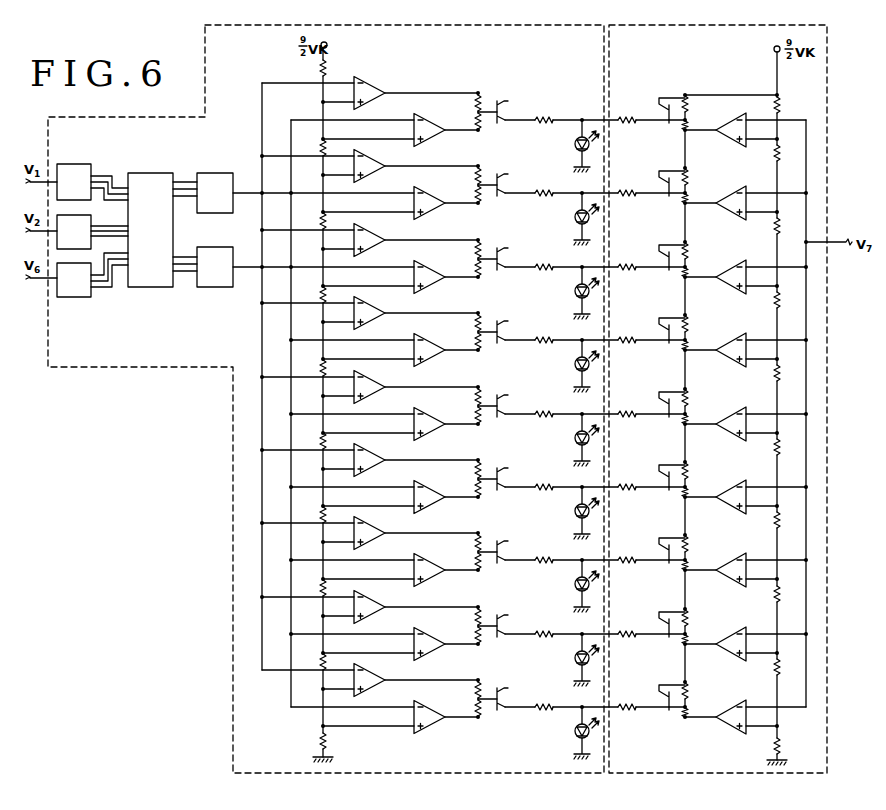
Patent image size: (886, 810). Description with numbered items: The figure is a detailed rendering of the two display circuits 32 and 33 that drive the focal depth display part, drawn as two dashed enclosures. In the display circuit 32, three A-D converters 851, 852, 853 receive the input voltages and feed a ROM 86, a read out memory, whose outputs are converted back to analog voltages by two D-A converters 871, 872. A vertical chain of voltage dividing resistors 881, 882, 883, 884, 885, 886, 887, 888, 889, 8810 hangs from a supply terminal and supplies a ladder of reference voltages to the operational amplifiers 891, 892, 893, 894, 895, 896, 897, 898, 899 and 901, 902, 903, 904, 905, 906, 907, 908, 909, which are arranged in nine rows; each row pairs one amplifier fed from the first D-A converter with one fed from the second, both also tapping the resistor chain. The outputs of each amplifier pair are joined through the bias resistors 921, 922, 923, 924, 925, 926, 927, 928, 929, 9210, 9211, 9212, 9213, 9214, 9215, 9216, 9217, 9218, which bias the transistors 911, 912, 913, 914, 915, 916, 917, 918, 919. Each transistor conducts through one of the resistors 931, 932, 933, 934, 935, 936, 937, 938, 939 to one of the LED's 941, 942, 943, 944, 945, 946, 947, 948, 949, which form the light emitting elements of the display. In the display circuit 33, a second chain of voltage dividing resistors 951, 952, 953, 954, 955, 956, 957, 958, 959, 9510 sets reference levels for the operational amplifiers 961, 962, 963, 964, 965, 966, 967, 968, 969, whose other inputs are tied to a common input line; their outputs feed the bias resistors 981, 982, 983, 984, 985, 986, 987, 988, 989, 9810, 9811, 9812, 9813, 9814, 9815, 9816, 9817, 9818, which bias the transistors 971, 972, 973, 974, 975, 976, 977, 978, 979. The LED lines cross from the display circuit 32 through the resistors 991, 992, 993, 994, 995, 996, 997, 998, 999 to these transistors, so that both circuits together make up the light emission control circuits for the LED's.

The display circuit 32 is at (233, 408).
The display circuit 33 is at (827, 517).
The A-D converter 851 is at (92, 182).
The A-D converter 852 is at (92, 232).
The A-D converter 853 is at (92, 275).
The ROM 86 is at (162, 230).
The D-A converter 871 is at (244, 193).
The D-A converter 872 is at (244, 267).
The voltage dividing resistor 881 is at (336, 71).
The voltage dividing resistor 882 is at (336, 150).
The voltage dividing resistor 883 is at (336, 223).
The voltage dividing resistor 884 is at (336, 297).
The voltage dividing resistor 885 is at (336, 370).
The voltage dividing resistor 886 is at (336, 443).
The voltage dividing resistor 887 is at (336, 517).
The voltage dividing resistor 888 is at (336, 590).
The voltage dividing resistor 889 is at (336, 664).
The voltage dividing resistor 8810 is at (340, 743).
The operational amplifier 891 is at (367, 84).
The operational amplifier 892 is at (370, 162).
The operational amplifier 893 is at (370, 236).
The operational amplifier 894 is at (370, 309).
The operational amplifier 895 is at (370, 383).
The operational amplifier 896 is at (370, 456).
The operational amplifier 897 is at (370, 529).
The operational amplifier 898 is at (370, 603).
The operational amplifier 899 is at (370, 676).
The operational amplifier 901 is at (430, 120).
The operational amplifier 902 is at (384, 198).
The operational amplifier 903 is at (384, 272).
The operational amplifier 904 is at (384, 345).
The operational amplifier 905 is at (384, 419).
The operational amplifier 906 is at (384, 492).
The operational amplifier 907 is at (384, 565).
The operational amplifier 908 is at (384, 639).
The operational amplifier 909 is at (384, 712).
The transistor 911 is at (506, 112).
The transistor 912 is at (506, 185).
The transistor 913 is at (506, 259).
The transistor 914 is at (506, 332).
The transistor 915 is at (506, 406).
The transistor 916 is at (506, 479).
The transistor 917 is at (506, 552).
The transistor 918 is at (506, 626).
The transistor 919 is at (506, 699).
The bias resistor 921 is at (481, 96).
The bias resistor 922 is at (481, 131).
The bias resistor 923 is at (494, 168).
The bias resistor 924 is at (494, 205).
The bias resistor 925 is at (494, 242).
The bias resistor 926 is at (494, 279).
The bias resistor 927 is at (494, 315).
The bias resistor 928 is at (494, 352).
The bias resistor 929 is at (494, 389).
The bias resistor 9210 is at (498, 426).
The bias resistor 9211 is at (498, 462).
The bias resistor 9212 is at (498, 499).
The bias resistor 9213 is at (498, 535).
The bias resistor 9214 is at (498, 572).
The bias resistor 9215 is at (498, 609).
The bias resistor 9216 is at (498, 646).
The bias resistor 9217 is at (498, 682).
The bias resistor 9218 is at (498, 719).
The resistor 931 is at (558, 113).
The resistor 932 is at (558, 186).
The resistor 933 is at (558, 260).
The resistor 934 is at (558, 333).
The resistor 935 is at (558, 407).
The resistor 936 is at (558, 480).
The resistor 937 is at (558, 553).
The resistor 938 is at (558, 627).
The resistor 939 is at (558, 700).
The LED 941 is at (576, 149).
The LED 942 is at (572, 218).
The LED 943 is at (572, 292).
The LED 944 is at (572, 365).
The LED 945 is at (572, 439).
The LED 946 is at (572, 512).
The LED 947 is at (572, 585).
The LED 948 is at (572, 659).
The LED 949 is at (572, 732).
The voltage dividing resistor 951 is at (790, 108).
The voltage dividing resistor 952 is at (790, 156).
The voltage dividing resistor 953 is at (790, 229).
The voltage dividing resistor 954 is at (790, 303).
The voltage dividing resistor 955 is at (790, 376).
The voltage dividing resistor 956 is at (790, 450).
The voltage dividing resistor 957 is at (790, 523).
The voltage dividing resistor 958 is at (790, 597).
The voltage dividing resistor 959 is at (790, 670).
The voltage dividing resistor 9510 is at (793, 748).
The operational amplifier 961 is at (726, 138).
The operational amplifier 962 is at (745, 214).
The operational amplifier 963 is at (745, 288).
The operational amplifier 964 is at (745, 361).
The operational amplifier 965 is at (745, 435).
The operational amplifier 966 is at (745, 508).
The operational amplifier 967 is at (745, 581).
The operational amplifier 968 is at (745, 655).
The operational amplifier 969 is at (745, 728).
The transistor 971 is at (664, 110).
The transistor 972 is at (664, 183).
The transistor 973 is at (664, 257).
The transistor 974 is at (664, 330).
The transistor 975 is at (664, 404).
The transistor 976 is at (664, 477).
The transistor 977 is at (664, 550).
The transistor 978 is at (664, 624).
The transistor 979 is at (664, 697).
The bias resistor 981 is at (698, 106).
The bias resistor 982 is at (698, 127).
The bias resistor 983 is at (698, 179).
The bias resistor 984 is at (698, 200).
The bias resistor 985 is at (698, 253).
The bias resistor 986 is at (698, 274).
The bias resistor 987 is at (698, 326).
The bias resistor 988 is at (698, 347).
The bias resistor 989 is at (698, 400).
The bias resistor 9810 is at (701, 421).
The bias resistor 9811 is at (701, 473).
The bias resistor 9812 is at (701, 494).
The bias resistor 9813 is at (701, 546).
The bias resistor 9814 is at (701, 567).
The bias resistor 9815 is at (701, 620).
The bias resistor 9816 is at (701, 641).
The bias resistor 9817 is at (701, 693).
The bias resistor 9818 is at (701, 714).
The resistor 991 is at (625, 131).
The resistor 992 is at (625, 204).
The resistor 993 is at (625, 278).
The resistor 994 is at (625, 351).
The resistor 995 is at (625, 425).
The resistor 996 is at (625, 498).
The resistor 997 is at (625, 571).
The resistor 998 is at (625, 645).
The resistor 999 is at (625, 718).